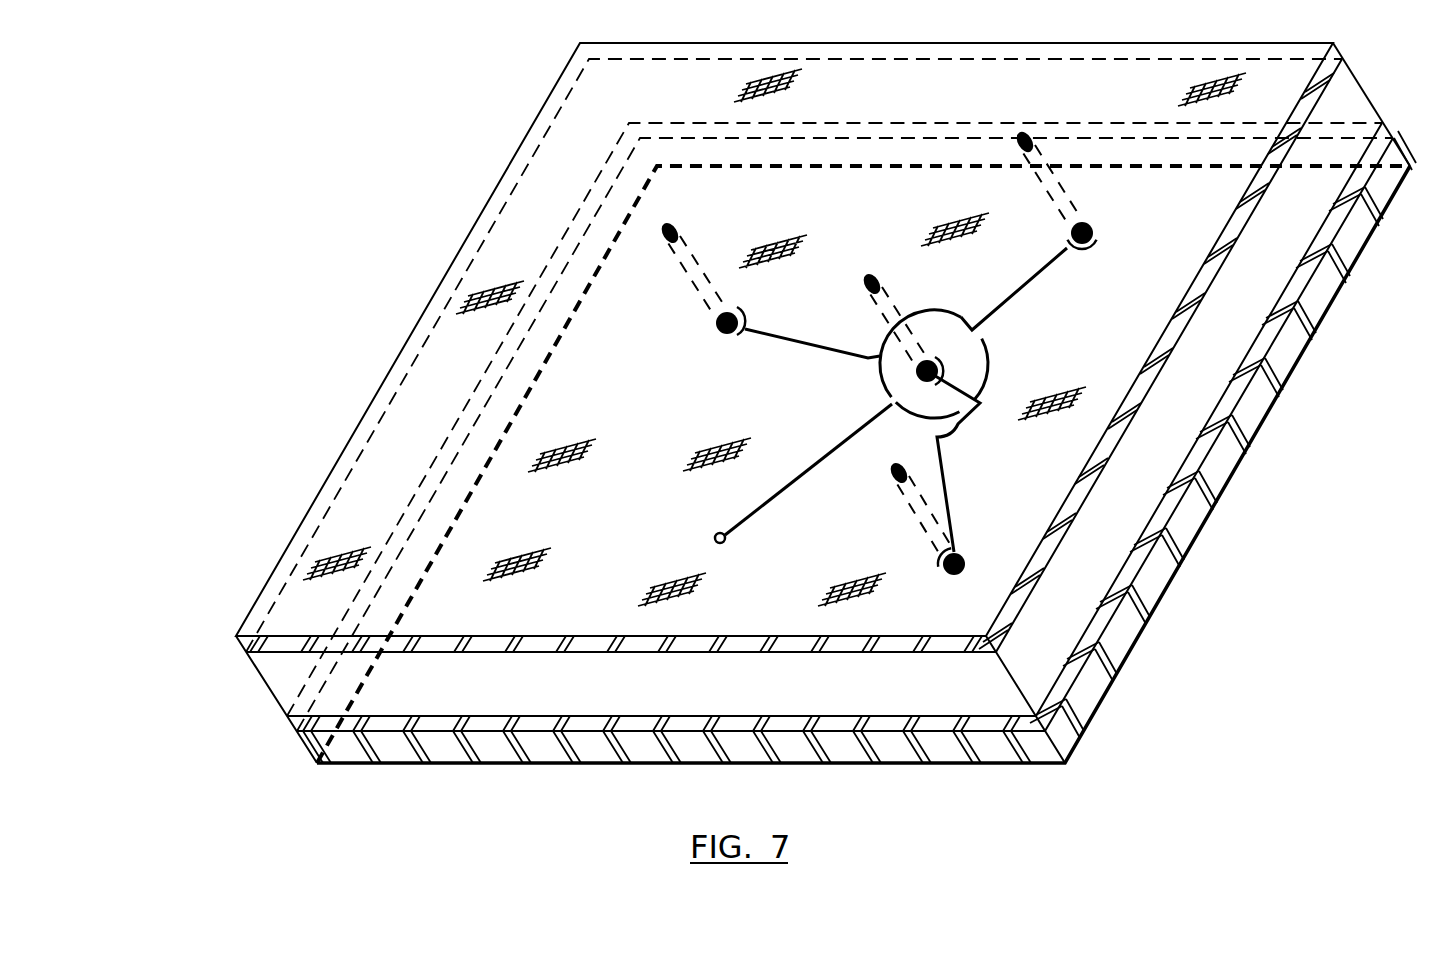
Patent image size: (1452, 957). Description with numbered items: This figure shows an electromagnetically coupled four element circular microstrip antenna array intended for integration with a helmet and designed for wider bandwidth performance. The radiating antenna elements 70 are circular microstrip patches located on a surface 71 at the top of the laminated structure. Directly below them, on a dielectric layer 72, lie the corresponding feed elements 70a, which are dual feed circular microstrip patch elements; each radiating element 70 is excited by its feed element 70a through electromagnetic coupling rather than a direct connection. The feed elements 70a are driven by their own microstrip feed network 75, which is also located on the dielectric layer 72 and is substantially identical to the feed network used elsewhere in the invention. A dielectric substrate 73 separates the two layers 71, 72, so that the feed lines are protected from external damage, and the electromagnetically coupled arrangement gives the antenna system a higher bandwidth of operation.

The radiating antenna elements 70 is at (673, 224).
The feed elements 70a is at (720, 336).
The surface 71 is at (1255, 207).
The dielectric layer 72 is at (1235, 403).
The dielectric substrate 73 is at (1150, 585).
The microstrip feed network 75 is at (1000, 333).